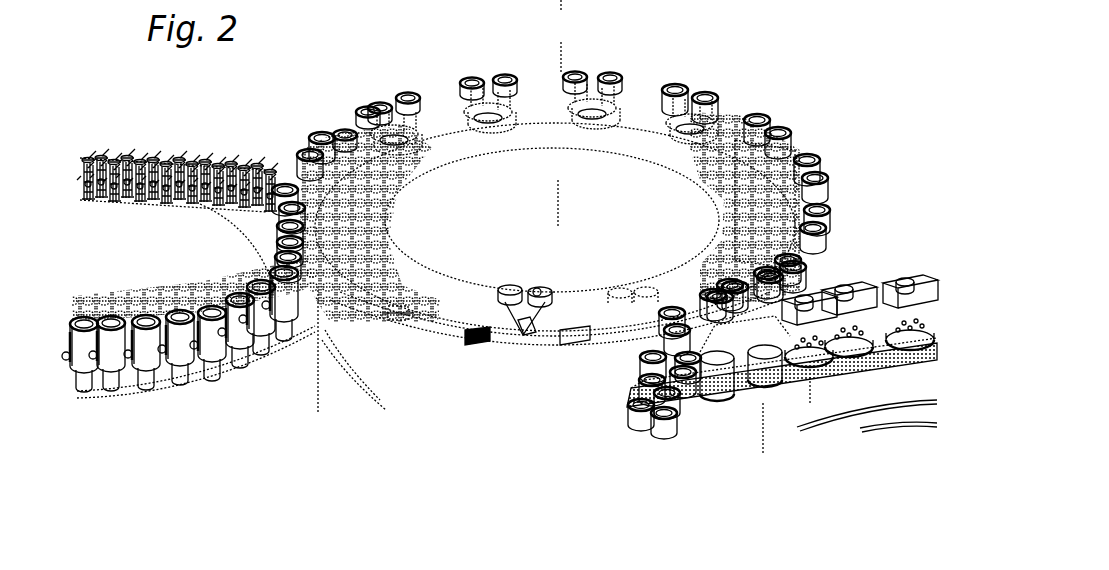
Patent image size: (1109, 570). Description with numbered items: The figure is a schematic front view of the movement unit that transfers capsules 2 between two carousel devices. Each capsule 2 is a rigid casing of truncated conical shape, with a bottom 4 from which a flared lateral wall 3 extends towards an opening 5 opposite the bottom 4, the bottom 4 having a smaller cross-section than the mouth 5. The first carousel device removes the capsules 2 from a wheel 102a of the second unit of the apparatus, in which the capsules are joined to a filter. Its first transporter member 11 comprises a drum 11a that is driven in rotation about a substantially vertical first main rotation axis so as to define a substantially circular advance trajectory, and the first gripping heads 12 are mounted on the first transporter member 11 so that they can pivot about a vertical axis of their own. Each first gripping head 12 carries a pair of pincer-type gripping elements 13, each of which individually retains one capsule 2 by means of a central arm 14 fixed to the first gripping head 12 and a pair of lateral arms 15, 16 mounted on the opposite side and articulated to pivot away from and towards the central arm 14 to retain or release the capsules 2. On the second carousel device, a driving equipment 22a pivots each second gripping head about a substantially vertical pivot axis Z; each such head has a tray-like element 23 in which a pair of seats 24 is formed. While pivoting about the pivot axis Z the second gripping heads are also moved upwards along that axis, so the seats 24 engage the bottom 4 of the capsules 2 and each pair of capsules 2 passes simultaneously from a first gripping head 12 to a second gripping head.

The capsule 2 is at (272, 182).
The flared lateral wall 3 is at (783, 167).
The bottom 4 is at (797, 155).
The opening 5 is at (782, 130).
The first transporter member 11 is at (476, 388).
The drum 11a is at (368, 350).
The first gripping head 12 is at (490, 100).
The gripping element 13 is at (395, 328).
The central arm 14 is at (527, 325).
The lateral arm 15 is at (558, 337).
The lateral arm 16 is at (480, 337).
The driving equipment 22a is at (733, 400).
The tray-like element 23 is at (910, 286).
The seat 24 is at (895, 290).
The wheel 102a is at (168, 385).
The pivot axis Z is at (810, 383).